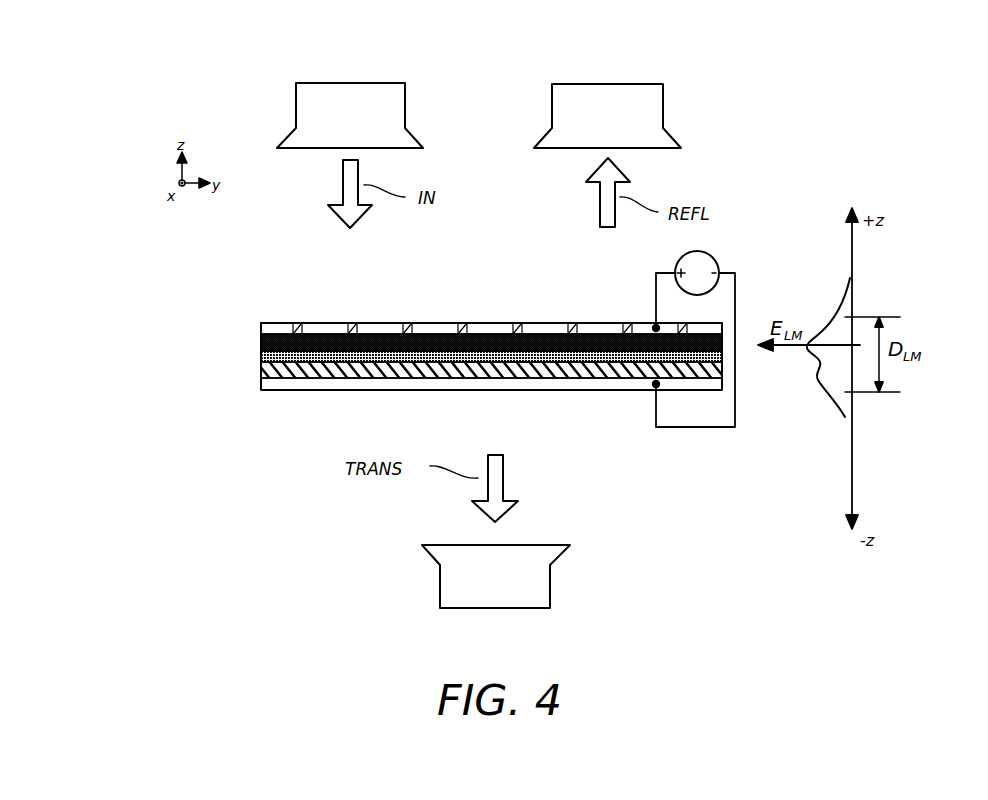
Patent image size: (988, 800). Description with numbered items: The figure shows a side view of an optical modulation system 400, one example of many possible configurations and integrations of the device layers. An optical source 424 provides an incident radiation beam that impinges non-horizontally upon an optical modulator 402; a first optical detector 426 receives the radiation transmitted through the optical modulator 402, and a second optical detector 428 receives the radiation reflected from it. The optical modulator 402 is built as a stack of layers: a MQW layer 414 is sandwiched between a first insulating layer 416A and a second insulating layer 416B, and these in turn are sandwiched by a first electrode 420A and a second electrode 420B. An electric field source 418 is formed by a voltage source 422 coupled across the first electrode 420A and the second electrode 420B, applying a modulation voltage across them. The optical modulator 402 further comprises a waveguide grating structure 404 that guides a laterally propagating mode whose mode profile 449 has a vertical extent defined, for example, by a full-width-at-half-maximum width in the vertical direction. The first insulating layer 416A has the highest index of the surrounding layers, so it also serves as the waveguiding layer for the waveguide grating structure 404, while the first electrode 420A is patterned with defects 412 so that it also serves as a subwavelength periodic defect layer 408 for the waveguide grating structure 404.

The optical modulation system 400 is at (197, 84).
The optical modulator 402 is at (93, 293).
The waveguide grating structure 404 is at (171, 293).
The subwavelength periodic defect layer 408 is at (262, 326).
The defects 412 is at (458, 323).
The MQW layer 414 is at (262, 357).
The first insulating layer 416A is at (262, 341).
The second insulating layer 416B is at (262, 372).
The electric field source 418 is at (743, 428).
The first electrode 420A is at (590, 325).
The second electrode 420B is at (587, 387).
The voltage source 422 is at (677, 265).
The optical source 424 is at (406, 100).
The first optical detector 426 is at (437, 584).
The second optical detector 428 is at (664, 103).
The mode profile 449 is at (828, 330).